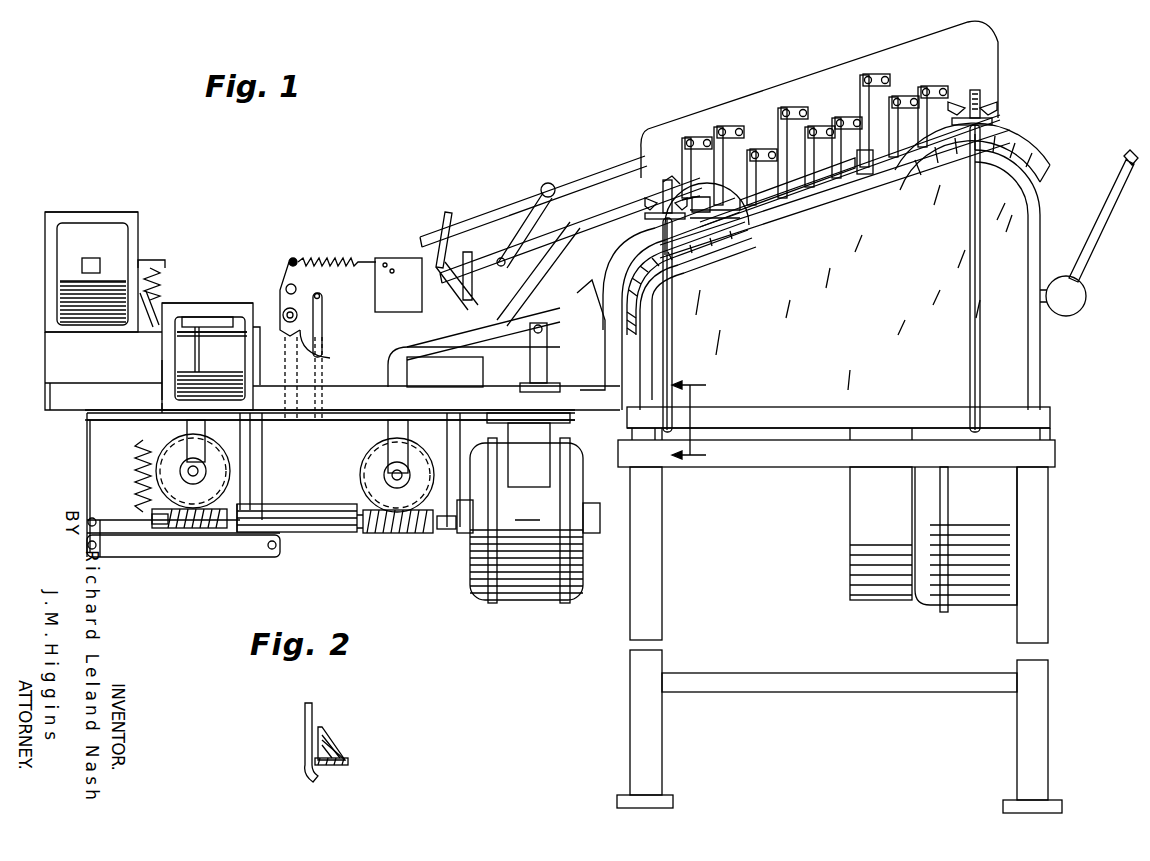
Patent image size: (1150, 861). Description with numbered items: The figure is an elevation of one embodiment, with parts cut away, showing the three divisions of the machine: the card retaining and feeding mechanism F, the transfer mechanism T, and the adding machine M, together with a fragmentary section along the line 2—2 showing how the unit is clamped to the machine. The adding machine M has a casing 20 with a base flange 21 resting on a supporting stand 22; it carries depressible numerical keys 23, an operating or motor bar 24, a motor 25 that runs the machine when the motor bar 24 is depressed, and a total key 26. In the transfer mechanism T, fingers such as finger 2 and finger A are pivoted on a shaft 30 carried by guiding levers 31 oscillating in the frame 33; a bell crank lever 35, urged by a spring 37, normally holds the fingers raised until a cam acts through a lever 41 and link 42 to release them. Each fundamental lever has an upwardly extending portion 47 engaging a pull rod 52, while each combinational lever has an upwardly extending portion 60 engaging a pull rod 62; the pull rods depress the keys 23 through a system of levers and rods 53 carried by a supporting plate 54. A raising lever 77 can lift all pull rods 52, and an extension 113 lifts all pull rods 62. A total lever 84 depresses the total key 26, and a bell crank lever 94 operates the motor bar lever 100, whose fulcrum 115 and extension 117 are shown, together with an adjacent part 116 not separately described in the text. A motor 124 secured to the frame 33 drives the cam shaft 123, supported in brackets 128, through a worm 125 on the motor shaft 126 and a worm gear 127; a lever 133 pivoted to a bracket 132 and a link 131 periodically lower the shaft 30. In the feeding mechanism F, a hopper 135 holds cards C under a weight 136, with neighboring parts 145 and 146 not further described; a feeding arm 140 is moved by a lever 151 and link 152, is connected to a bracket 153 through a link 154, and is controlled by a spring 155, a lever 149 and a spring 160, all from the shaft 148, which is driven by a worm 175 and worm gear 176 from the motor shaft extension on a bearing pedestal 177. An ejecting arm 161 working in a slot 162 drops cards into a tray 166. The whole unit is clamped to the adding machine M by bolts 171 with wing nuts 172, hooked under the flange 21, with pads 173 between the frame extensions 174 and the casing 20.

In FIG. 1, the finger 2 is at (697, 413).
In FIG. 1, the casing 20 is at (1010, 348).
In FIG. 2, the casing 20 is at (324, 731).
In FIG. 1, the base flange 21 is at (1040, 420).
In FIG. 2, the base flange 21 is at (318, 770).
In FIG. 1, the supporting frame or stand 22 is at (1040, 490).
In FIG. 1, the numerical keys 23 is at (868, 176).
In FIG. 1, the motor bar 24 is at (760, 215).
In FIG. 1, the motor 25 is at (945, 607).
In FIG. 1, the total key 26 is at (737, 182).
In FIG. 1, the shaft 30 is at (279, 300).
In FIG. 1, the guiding levers 31 is at (298, 318).
In FIG. 1, the frame 33 is at (55, 400).
In FIG. 1, the bell crank lever 35 is at (289, 264).
In FIG. 1, the spring 37 is at (335, 248).
In FIG. 1, the lever 41 is at (338, 415).
In FIG. 1, the link 42 is at (324, 303).
In FIG. 1, the upwardly extending portion 47 is at (432, 280).
In FIG. 1, the pull rod 52 is at (515, 205).
In FIG. 1, the system of levers and rods 53 is at (700, 140).
In FIG. 1, the supporting plate 54 is at (797, 86).
In FIG. 1, the upwardly extending portion 60 is at (483, 347).
In FIG. 1, the pull rod 62 is at (512, 200).
In FIG. 1, the raising lever 77 is at (552, 186).
In FIG. 1, the total lever 84 is at (707, 200).
In FIG. 1, the bell crank lever 94 is at (667, 195).
In FIG. 1, the motor bar lever 100 is at (664, 304).
In FIG. 1, the extension 113 is at (452, 258).
In FIG. 1, the fulcrum 115 is at (548, 323).
In FIG. 1, the link 116 is at (548, 344).
In FIG. 1, the extension 117 is at (410, 352).
In FIG. 1, the shaft 123 is at (392, 462).
In FIG. 1, the motor 124 is at (505, 574).
In FIG. 1, the worm 125 is at (395, 535).
In FIG. 1, the motor shaft 126 is at (440, 532).
In FIG. 1, the worm gear 127 is at (385, 482).
In FIG. 1, the brackets 128 is at (400, 415).
In FIG. 1, the link 131 is at (305, 362).
In FIG. 1, the bracket 132 is at (488, 432).
In FIG. 1, the lever 133 is at (370, 535).
In FIG. 1, the hopper 135 is at (62, 214).
In FIG. 1, the weight 136 is at (67, 272).
In FIG. 1, the feeding arm 140 is at (85, 432).
In FIG. 1, the lever 145 is at (155, 312).
In FIG. 1, the spring 146 is at (163, 290).
In FIG. 1, the shaft 148 is at (137, 470).
In FIG. 1, the lever 149 is at (162, 410).
In FIG. 1, the lever 151 is at (255, 535).
In FIG. 1, the link 152 is at (120, 527).
In FIG. 1, the bracket 153 is at (270, 543).
In FIG. 1, the link 154 is at (175, 548).
In FIG. 1, the spring 155 is at (180, 440).
In FIG. 1, the spring 160 is at (180, 470).
In FIG. 1, the ejecting arm 161 is at (175, 334).
In FIG. 1, the slot 162 is at (211, 356).
In FIG. 1, the receiving compartment or tray 166 is at (166, 366).
In FIG. 1, the bolts 171 is at (680, 295).
In FIG. 2, the bolts 171 is at (305, 727).
In FIG. 1, the wing nuts 172 is at (1000, 107).
In FIG. 1, the pads 173 is at (650, 328).
In FIG. 1, the extensions 174 is at (610, 367).
In FIG. 1, the worm 175 is at (180, 558).
In FIG. 1, the worm gear 176 is at (208, 530).
In FIG. 1, the bearing pedestal 177 is at (359, 464).
In FIG. 1, the finger A is at (248, 305).
In FIG. 1, the card C is at (58, 298).
In FIG. 1, the card retaining and feeding mechanism F is at (140, 216).
In FIG. 1, the adding machine M is at (1040, 188).
In FIG. 2, the adding machine M is at (340, 749).
In FIG. 1, the transfer mechanism T is at (405, 255).